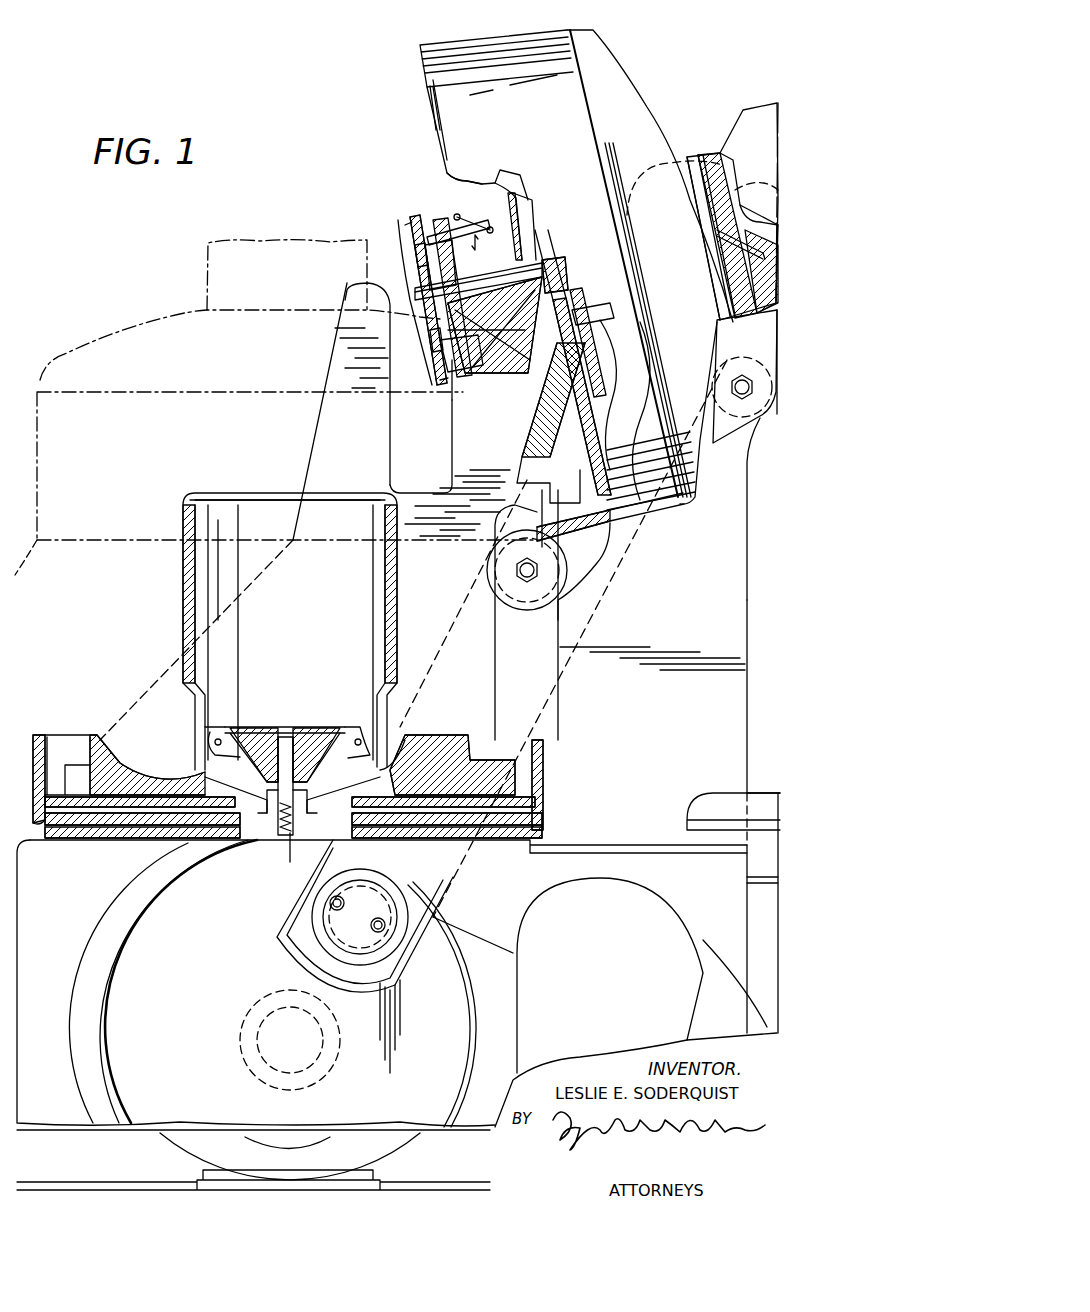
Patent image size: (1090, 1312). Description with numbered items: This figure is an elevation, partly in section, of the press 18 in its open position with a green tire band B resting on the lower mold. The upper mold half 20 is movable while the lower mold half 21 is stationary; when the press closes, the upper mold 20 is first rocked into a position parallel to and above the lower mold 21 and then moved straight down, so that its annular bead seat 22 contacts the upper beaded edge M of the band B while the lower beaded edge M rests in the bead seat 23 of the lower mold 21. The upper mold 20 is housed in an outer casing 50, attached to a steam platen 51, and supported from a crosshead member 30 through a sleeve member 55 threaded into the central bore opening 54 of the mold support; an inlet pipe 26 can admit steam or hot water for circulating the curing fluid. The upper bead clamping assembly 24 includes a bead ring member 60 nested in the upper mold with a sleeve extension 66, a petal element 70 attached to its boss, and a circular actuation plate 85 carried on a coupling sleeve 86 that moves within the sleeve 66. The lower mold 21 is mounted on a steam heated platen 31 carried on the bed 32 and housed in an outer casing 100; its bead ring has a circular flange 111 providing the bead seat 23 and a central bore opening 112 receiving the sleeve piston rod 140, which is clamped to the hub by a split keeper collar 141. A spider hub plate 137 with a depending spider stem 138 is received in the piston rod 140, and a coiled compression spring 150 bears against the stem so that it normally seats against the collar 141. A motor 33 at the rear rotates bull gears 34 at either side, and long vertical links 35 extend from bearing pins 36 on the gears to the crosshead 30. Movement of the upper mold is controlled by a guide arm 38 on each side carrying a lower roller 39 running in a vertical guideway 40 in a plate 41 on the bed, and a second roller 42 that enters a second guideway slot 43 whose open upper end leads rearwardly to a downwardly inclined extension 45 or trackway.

The press 18 is at (385, 159).
The upper mold half 20 is at (428, 105).
The lower mold half 21 is at (98, 736).
The annular bead seat 22 is at (527, 395).
The bead seat 23 is at (400, 760).
The bead clamping assembly 24 is at (397, 223).
The inlet pipe 26 is at (735, 255).
The crosshead member 30 is at (710, 190).
The steam heated platen 31 is at (530, 812).
The bed 32 is at (540, 836).
The motor 33 is at (710, 810).
The bull gears 34 is at (98, 942).
The vertical links 35 is at (630, 562).
The bearing pins 36 is at (322, 917).
The guide arm 38 is at (745, 444).
The lower roller 39 is at (530, 605).
The vertical guideway 40 is at (560, 686).
The plate 41 is at (740, 725).
The second roller 42 is at (758, 405).
The second guideway slot 43 is at (447, 445).
The downwardly inclined extension 45 is at (660, 408).
The outer casing 50 is at (420, 62).
The steam platen 51 is at (625, 360).
The threaded central bore opening 54 is at (648, 350).
The sleeve member 55 is at (600, 300).
The bead ring member 60 is at (512, 245).
The sleeve extension 66 is at (590, 280).
The upper bead clamping petal element 70 is at (455, 212).
The circular actuation plate 85 is at (482, 385).
The coupling sleeve 86 is at (530, 272).
The outer casing 100 is at (548, 765).
The circular flange 111 is at (215, 730).
The central bore opening 112 is at (296, 816).
The spider hub plate 137 is at (280, 727).
The spider stem 138 is at (297, 727).
The sleeve piston rod 140 is at (240, 850).
The split keeper collar 141 is at (352, 727).
The coiled compression spring 150 is at (293, 858).
The green tire band B is at (184, 628).
The beaded edge M is at (205, 490).